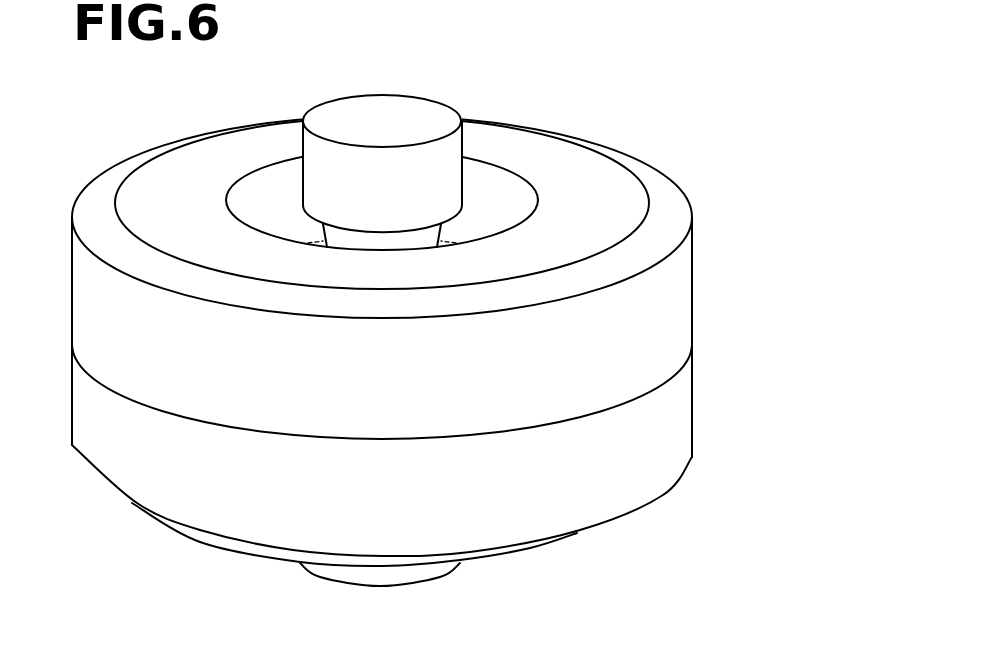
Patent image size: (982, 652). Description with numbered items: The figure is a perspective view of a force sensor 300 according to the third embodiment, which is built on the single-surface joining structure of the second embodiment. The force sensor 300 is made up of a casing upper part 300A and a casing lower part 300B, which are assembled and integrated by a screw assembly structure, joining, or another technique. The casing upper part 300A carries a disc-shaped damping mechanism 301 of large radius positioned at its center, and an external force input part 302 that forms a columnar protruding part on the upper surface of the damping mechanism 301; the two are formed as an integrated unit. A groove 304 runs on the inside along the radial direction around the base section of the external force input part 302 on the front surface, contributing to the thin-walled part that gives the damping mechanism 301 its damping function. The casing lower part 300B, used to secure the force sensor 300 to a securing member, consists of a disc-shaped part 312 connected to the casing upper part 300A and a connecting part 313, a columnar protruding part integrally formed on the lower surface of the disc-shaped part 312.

The force sensor 300 is at (454, 322).
The casing upper part 300A is at (696, 293).
The casing lower part 300B is at (454, 479).
The damping mechanism 301 is at (562, 158).
The external force input part 302 is at (388, 110).
The groove 304 is at (492, 187).
The disc-shaped part 312 is at (627, 485).
The connecting part 313 is at (417, 575).